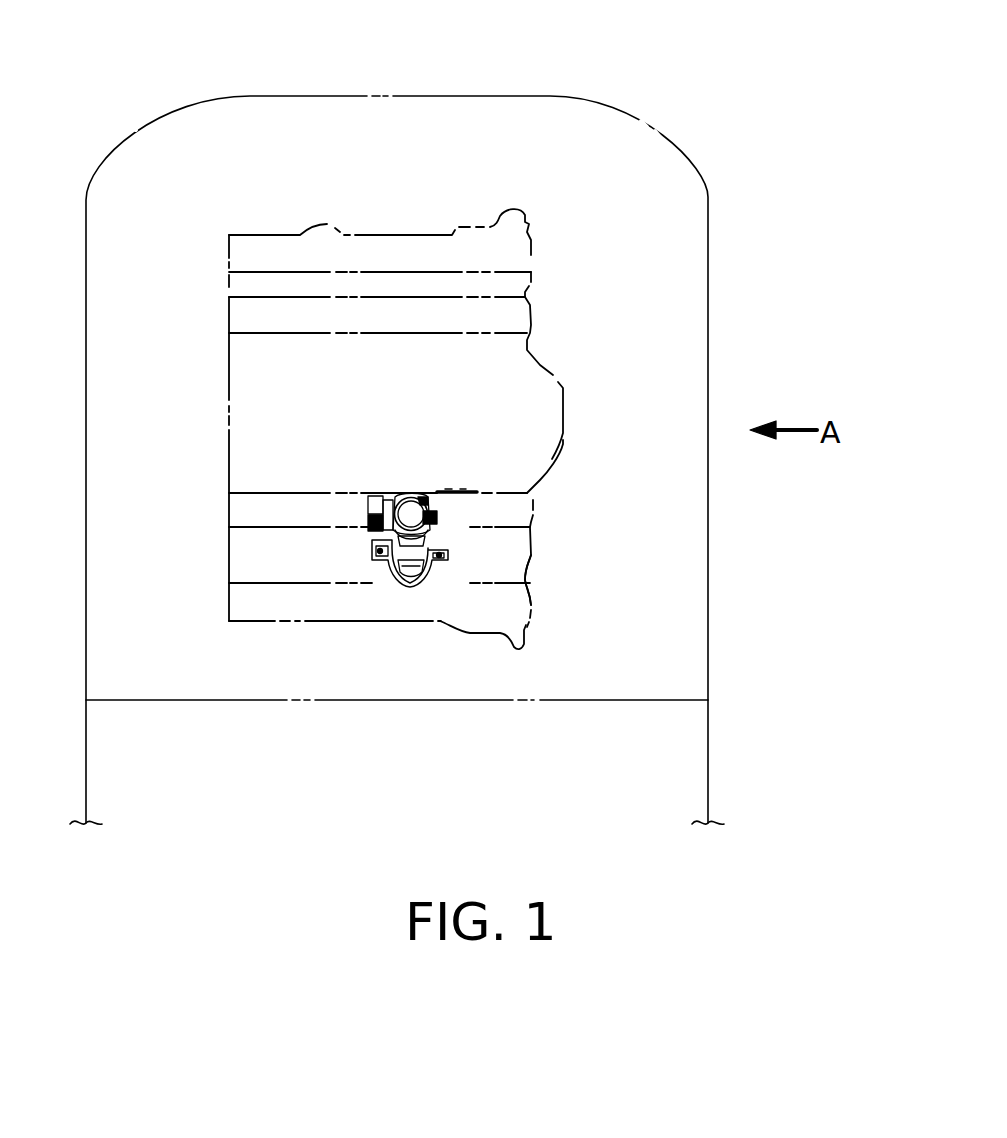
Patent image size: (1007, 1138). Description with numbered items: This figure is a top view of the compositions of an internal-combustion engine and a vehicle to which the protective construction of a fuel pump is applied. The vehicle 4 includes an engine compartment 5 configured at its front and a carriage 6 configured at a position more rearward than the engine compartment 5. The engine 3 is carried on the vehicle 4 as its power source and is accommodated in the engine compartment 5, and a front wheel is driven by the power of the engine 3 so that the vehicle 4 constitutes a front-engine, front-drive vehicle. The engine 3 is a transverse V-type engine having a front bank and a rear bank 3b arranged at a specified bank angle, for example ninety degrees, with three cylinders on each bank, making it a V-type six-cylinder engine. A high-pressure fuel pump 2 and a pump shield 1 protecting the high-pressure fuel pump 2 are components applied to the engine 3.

The pump shield 1 is at (403, 587).
The high-pressure fuel pump 2 is at (408, 492).
The internal-combustion engine 3 is at (540, 235).
The rear bank 3b is at (531, 593).
The vehicle 4 is at (556, 96).
The engine compartment 5 is at (170, 442).
The carriage 6 is at (413, 770).